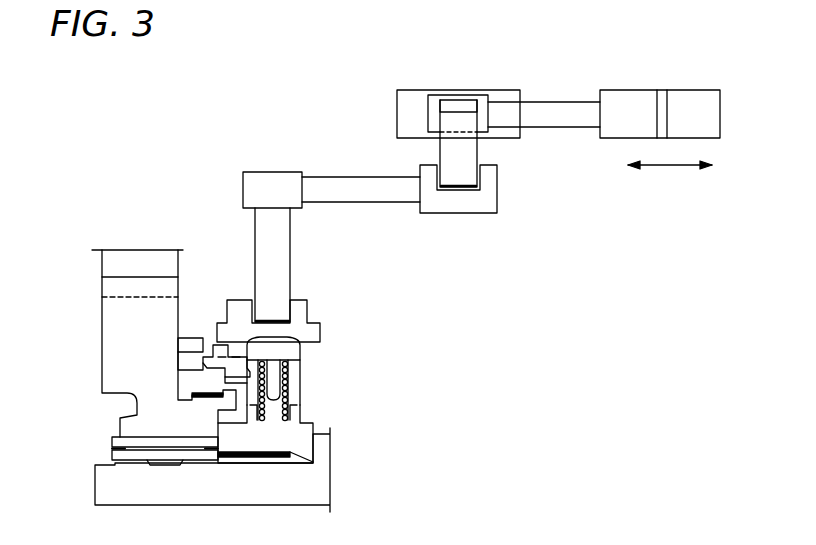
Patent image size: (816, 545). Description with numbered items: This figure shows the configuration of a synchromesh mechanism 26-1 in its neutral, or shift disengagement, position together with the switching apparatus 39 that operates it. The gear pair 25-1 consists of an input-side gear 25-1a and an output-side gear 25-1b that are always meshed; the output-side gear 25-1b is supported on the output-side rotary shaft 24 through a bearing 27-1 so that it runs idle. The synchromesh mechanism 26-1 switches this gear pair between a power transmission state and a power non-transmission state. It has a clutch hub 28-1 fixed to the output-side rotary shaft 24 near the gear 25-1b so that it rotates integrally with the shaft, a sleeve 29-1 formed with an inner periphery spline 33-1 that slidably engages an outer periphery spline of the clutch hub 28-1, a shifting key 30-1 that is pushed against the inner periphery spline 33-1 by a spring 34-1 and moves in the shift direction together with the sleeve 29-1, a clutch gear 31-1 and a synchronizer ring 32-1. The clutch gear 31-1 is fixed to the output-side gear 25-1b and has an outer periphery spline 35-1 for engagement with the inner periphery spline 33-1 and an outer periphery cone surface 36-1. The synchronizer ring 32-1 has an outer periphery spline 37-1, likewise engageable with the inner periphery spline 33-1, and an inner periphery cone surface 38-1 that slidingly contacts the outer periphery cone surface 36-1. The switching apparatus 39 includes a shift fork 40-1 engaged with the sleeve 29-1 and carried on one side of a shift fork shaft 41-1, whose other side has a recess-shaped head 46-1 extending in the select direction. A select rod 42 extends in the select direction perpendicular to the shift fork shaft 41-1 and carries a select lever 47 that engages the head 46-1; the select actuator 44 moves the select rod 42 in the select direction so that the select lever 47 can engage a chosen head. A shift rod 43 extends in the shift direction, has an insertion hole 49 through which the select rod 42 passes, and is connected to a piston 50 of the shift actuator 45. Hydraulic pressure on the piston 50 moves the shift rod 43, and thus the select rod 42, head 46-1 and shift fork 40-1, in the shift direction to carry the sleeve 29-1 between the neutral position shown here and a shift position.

The output-side rotary shaft 24 is at (115, 490).
The gear pair 25-1 is at (85, 216).
The input-side gear 25-1a is at (110, 266).
The output-side gear 25-1b is at (115, 321).
The synchromesh mechanism 26-1 is at (388, 386).
The bearing 27-1 is at (112, 440).
The clutch hub 28-1 is at (297, 445).
The sleeve 29-1 is at (300, 313).
The shifting key 30-1 is at (300, 360).
The clutch gear 31-1 is at (200, 385).
The synchronizer ring 32-1 is at (232, 372).
The inner periphery spline 33-1 is at (213, 345).
The spring 34-1 is at (290, 392).
The outer periphery spline 35-1 is at (192, 340).
The outer periphery cone surface 36-1 is at (236, 355).
The outer periphery spline 37-1 is at (207, 357).
The inner periphery cone surface 38-1 is at (222, 355).
The switching apparatus 39 is at (306, 85).
The shift fork 40-1 is at (278, 251).
The shift fork shaft 41-1 is at (318, 188).
The select rod 42 is at (466, 103).
The shift rod 43 is at (556, 100).
The select actuator 44 is at (393, 82).
The shift actuator 45 is at (691, 80).
The head 46-1 is at (461, 207).
The select lever 47 is at (468, 176).
The insertion hole 49 is at (456, 103).
The piston 50 is at (662, 88).